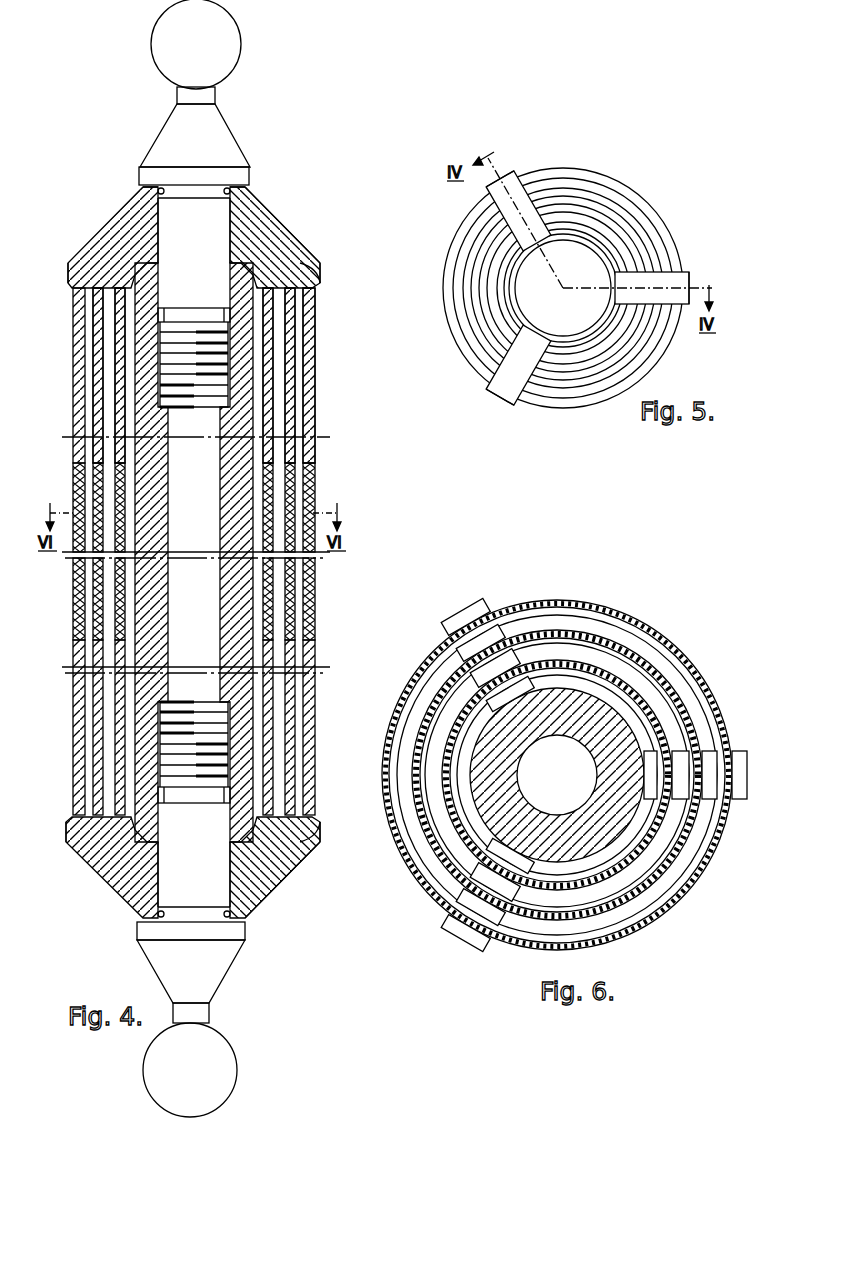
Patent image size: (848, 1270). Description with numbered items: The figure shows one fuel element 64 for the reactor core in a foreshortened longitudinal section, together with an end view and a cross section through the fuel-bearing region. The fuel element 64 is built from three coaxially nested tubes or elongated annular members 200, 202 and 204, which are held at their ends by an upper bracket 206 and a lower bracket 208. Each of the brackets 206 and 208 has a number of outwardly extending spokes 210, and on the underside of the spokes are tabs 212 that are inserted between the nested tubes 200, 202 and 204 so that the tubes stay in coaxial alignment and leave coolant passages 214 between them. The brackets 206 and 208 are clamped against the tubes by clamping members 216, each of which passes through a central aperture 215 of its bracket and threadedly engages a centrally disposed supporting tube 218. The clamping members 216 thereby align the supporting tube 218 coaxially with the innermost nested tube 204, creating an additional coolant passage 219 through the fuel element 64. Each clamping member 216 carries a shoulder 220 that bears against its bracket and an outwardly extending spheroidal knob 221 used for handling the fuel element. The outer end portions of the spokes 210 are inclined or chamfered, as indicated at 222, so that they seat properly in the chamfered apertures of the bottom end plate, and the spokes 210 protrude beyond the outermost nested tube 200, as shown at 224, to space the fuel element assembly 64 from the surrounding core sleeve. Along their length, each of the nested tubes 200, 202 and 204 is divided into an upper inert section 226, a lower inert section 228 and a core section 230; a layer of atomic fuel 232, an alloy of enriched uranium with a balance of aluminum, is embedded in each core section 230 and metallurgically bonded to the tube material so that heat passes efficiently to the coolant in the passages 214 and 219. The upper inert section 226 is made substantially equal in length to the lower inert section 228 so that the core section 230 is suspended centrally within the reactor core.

In FIG. 4, the fuel element 64 is at (348, 215).
In FIG. 4, the outermost nested tube 200 is at (310, 346).
In FIG. 5, the outermost nested tube 200 is at (648, 213).
In FIG. 6, the outermost nested tube 200 is at (702, 674).
In FIG. 4, the nested tube 202 is at (288, 380).
In FIG. 5, the nested tube 202 is at (640, 238).
In FIG. 6, the nested tube 202 is at (684, 703).
In FIG. 4, the innermost nested tube 204 is at (266, 400).
In FIG. 5, the innermost nested tube 204 is at (625, 258).
In FIG. 6, the innermost nested tube 204 is at (662, 732).
In FIG. 4, the upper bracket 206 is at (236, 190).
In FIG. 4, the lower bracket 208 is at (247, 920).
In FIG. 4, the spokes 210 is at (103, 237).
In FIG. 5, the spokes 210 is at (512, 181).
In FIG. 6, the spokes 210 is at (462, 636).
In FIG. 4, the tabs 212 is at (312, 268).
In FIG. 6, the tabs 212 is at (502, 660).
In FIG. 4, the coolant passages 214 is at (110, 375).
In FIG. 5, the coolant passages 214 is at (597, 214).
In FIG. 6, the coolant passages 214 is at (614, 662).
In FIG. 4, the central apertures 215 is at (233, 222).
In FIG. 4, the clamping members 216 is at (217, 128).
In FIG. 5, the clamping members 216 is at (556, 240).
In FIG. 4, the supporting tube 218 is at (238, 653).
In FIG. 6, the supporting tube 218 is at (517, 795).
In FIG. 4, the additional coolant passage 219 is at (258, 348).
In FIG. 4, the shoulder 220 is at (247, 175).
In FIG. 4, the spheroidal knob 221 is at (232, 37).
In FIG. 5, the spheroidal knob 221 is at (592, 308).
In FIG. 4, the chamfered portion 222 is at (298, 252).
In FIG. 4, the protruding spoke portion 224 is at (69, 270).
In FIG. 5, the protruding spoke portion 224 is at (491, 180).
In FIG. 6, the protruding spoke portion 224 is at (468, 605).
In FIG. 4, the upper inert section 226 is at (270, 428).
In FIG. 4, the lower inert section 228 is at (264, 750).
In FIG. 4, the core section 230 is at (264, 602).
In FIG. 4, the atomic fuel 232 is at (270, 515).
In FIG. 6, the atomic fuel 232 is at (580, 688).